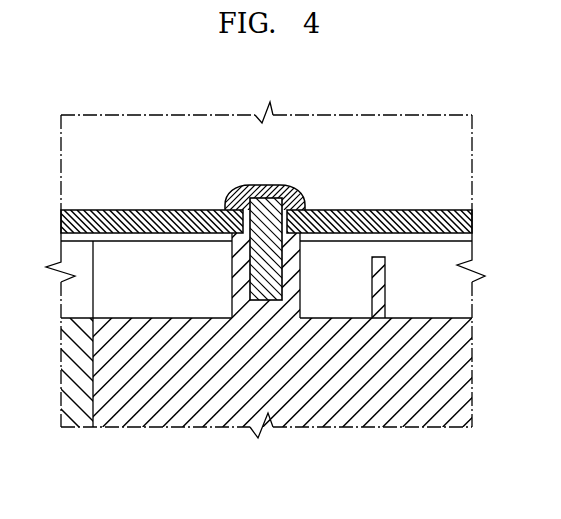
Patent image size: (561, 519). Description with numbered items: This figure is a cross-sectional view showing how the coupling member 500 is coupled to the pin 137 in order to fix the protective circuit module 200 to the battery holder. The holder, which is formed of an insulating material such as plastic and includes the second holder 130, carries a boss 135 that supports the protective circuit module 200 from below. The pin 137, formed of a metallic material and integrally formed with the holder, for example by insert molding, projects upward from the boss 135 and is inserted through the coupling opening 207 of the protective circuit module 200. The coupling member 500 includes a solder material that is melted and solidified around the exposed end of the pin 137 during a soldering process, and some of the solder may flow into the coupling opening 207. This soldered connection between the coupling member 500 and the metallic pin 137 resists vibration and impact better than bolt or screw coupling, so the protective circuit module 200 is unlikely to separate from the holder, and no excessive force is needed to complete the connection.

The second holder 130 is at (312, 413).
The boss 135 is at (243, 287).
The pin 137 is at (232, 263).
The protective circuit module 200 is at (398, 210).
The coupling opening 207 is at (294, 203).
The coupling member 500 is at (268, 184).